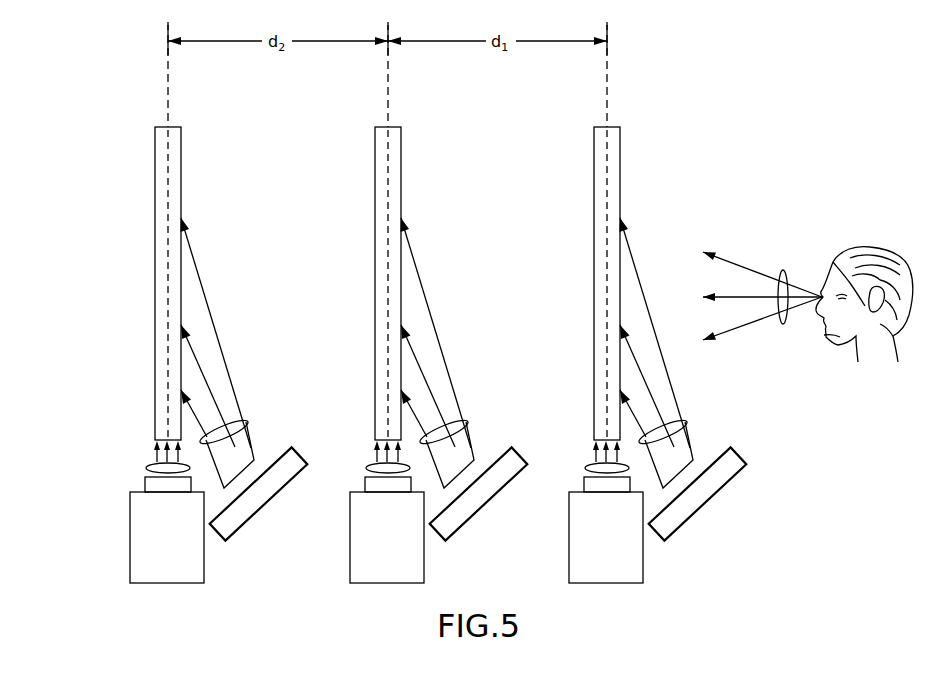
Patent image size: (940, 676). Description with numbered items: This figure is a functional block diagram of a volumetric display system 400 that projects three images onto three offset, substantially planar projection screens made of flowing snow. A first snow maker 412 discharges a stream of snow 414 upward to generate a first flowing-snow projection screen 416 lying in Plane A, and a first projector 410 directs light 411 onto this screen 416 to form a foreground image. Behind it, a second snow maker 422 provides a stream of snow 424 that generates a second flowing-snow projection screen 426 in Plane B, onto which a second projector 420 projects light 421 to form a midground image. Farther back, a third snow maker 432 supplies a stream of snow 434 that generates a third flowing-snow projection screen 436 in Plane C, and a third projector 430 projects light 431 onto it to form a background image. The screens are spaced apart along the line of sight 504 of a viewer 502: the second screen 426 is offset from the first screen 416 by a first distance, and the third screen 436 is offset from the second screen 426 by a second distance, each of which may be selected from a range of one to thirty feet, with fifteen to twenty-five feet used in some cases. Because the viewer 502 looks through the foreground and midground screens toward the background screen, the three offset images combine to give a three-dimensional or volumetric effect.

The display system 400 is at (95, 519).
The first projector 410 is at (683, 536).
The light 411 is at (685, 421).
The first snow maker 412 is at (606, 586).
The stream of snow 414 is at (590, 462).
The first flowing-snow projection screen 416 is at (610, 127).
The second projector 420 is at (476, 498).
The light 421 is at (443, 333).
The second snow maker 422 is at (387, 552).
The stream of snow 424 is at (378, 450).
The second flowing-snow projection screen 426 is at (400, 265).
The third projector 430 is at (256, 498).
The light 431 is at (223, 333).
The third snow maker 432 is at (167, 552).
The stream of snow 434 is at (158, 450).
The third flowing-snow projection screen 436 is at (180, 265).
The viewer 502 is at (875, 250).
The line of sight 504 is at (783, 270).